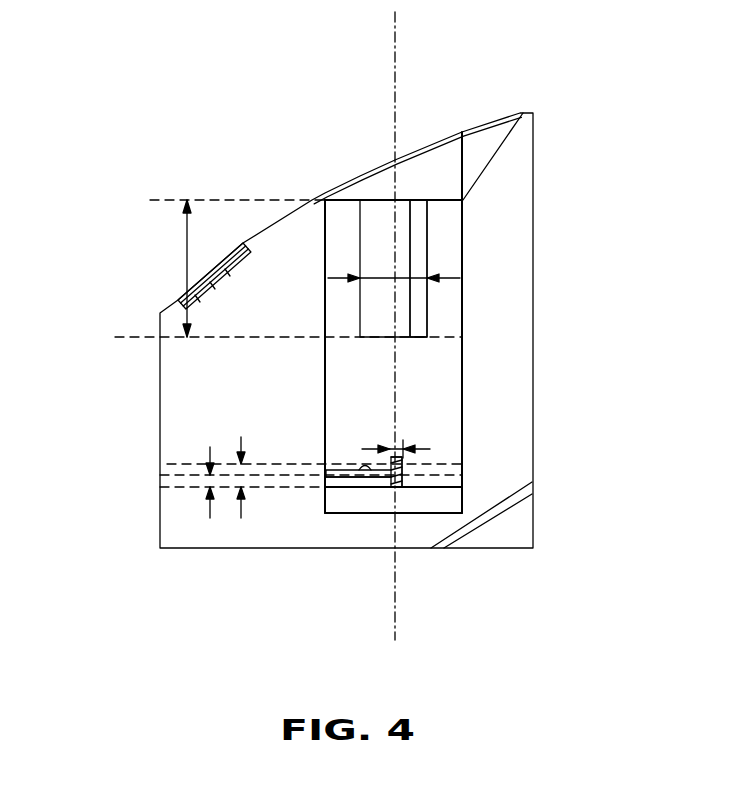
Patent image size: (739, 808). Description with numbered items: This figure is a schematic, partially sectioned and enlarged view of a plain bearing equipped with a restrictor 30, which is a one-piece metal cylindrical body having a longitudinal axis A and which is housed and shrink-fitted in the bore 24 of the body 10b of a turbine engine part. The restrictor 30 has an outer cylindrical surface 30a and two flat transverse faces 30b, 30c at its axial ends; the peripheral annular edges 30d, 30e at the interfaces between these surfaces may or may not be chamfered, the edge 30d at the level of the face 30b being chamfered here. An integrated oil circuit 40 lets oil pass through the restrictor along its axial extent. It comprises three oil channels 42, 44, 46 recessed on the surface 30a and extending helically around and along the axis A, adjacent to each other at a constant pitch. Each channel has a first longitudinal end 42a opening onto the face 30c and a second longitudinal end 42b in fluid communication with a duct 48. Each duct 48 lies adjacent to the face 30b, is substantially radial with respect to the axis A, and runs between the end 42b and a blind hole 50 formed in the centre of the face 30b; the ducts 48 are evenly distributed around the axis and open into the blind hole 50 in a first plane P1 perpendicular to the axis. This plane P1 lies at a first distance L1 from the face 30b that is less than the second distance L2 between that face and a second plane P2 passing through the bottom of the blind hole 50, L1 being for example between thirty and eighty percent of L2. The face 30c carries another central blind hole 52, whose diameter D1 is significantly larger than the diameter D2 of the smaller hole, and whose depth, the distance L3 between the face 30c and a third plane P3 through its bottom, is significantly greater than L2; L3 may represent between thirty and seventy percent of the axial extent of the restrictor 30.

The longitudinal axis A is at (400, 32).
The body 10b is at (515, 200).
The bore 24 is at (450, 137).
The restrictor 30 is at (358, 192).
The outer cylindrical surface 30a is at (325, 383).
The transverse face 30b is at (440, 488).
The transverse face 30c is at (437, 198).
The peripheral annular edge 30d is at (465, 483).
The peripheral annular edge 30e is at (523, 113).
The integrated oil circuit 40 is at (330, 480).
The oil channel 42 is at (463, 465).
The first longitudinal end 42a is at (314, 198).
The second longitudinal end 42b is at (342, 489).
The oil channel 44 is at (463, 458).
The oil channel 46 is at (463, 437).
The duct 48 is at (364, 480).
The blind hole 50 is at (403, 484).
The blind hole 52 is at (427, 304).
The diameter D1 is at (463, 258).
The diameter D2 is at (425, 443).
The first distance L1 is at (207, 513).
The second distance L2 is at (232, 517).
The distance L3 is at (185, 253).
The first plane P1 is at (202, 477).
The second plane P2 is at (195, 464).
The third plane P3 is at (140, 340).